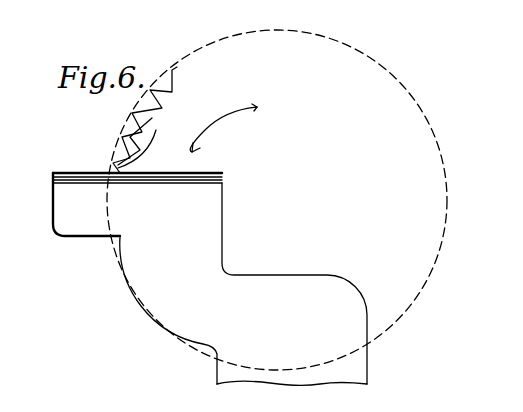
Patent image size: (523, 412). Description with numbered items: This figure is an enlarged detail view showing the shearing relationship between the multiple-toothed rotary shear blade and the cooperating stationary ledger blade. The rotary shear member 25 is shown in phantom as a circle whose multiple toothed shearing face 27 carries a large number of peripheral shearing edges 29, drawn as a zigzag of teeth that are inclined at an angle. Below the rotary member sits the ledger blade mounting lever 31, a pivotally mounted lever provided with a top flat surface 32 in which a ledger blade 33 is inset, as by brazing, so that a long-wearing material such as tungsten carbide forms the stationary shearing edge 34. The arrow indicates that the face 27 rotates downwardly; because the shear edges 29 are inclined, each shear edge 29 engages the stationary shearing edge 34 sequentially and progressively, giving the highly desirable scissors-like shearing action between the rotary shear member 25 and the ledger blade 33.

The rotary shear member 25 is at (448, 180).
The multiple toothed shearing face 27 is at (177, 72).
The peripheral shearing edges 29 is at (158, 128).
The ledger blade mounting lever 31 is at (168, 300).
The top flat surface 32 is at (65, 175).
The ledger blade 33 is at (167, 176).
The stationary shearing edge 34 is at (110, 176).